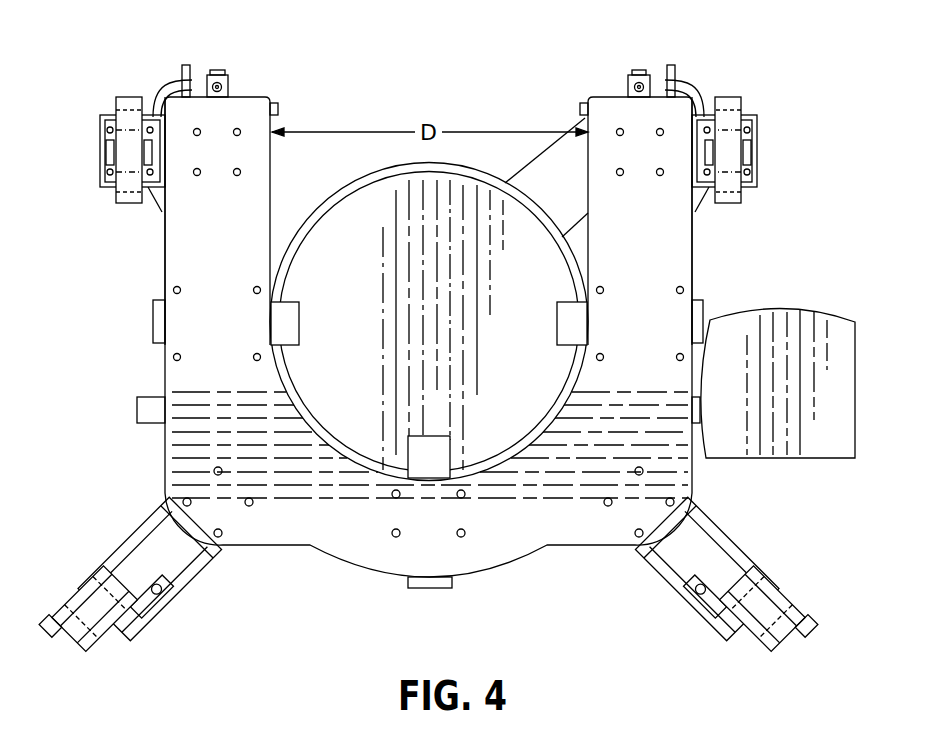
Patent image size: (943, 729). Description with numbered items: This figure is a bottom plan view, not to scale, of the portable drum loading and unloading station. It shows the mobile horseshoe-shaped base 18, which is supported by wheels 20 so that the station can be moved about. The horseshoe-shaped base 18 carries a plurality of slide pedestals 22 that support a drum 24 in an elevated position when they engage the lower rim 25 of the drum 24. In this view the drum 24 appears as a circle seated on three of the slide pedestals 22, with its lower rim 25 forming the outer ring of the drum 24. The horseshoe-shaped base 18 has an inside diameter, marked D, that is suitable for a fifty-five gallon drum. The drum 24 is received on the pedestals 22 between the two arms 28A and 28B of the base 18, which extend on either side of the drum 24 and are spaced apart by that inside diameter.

The horseshoe-shaped base 18 is at (280, 532).
The wheels 20 is at (115, 200).
The slide pedestals 22 is at (300, 323).
The drum 24 is at (441, 243).
The lower rim 25 is at (332, 200).
The arm 28A is at (607, 95).
The arm 28B is at (258, 95).